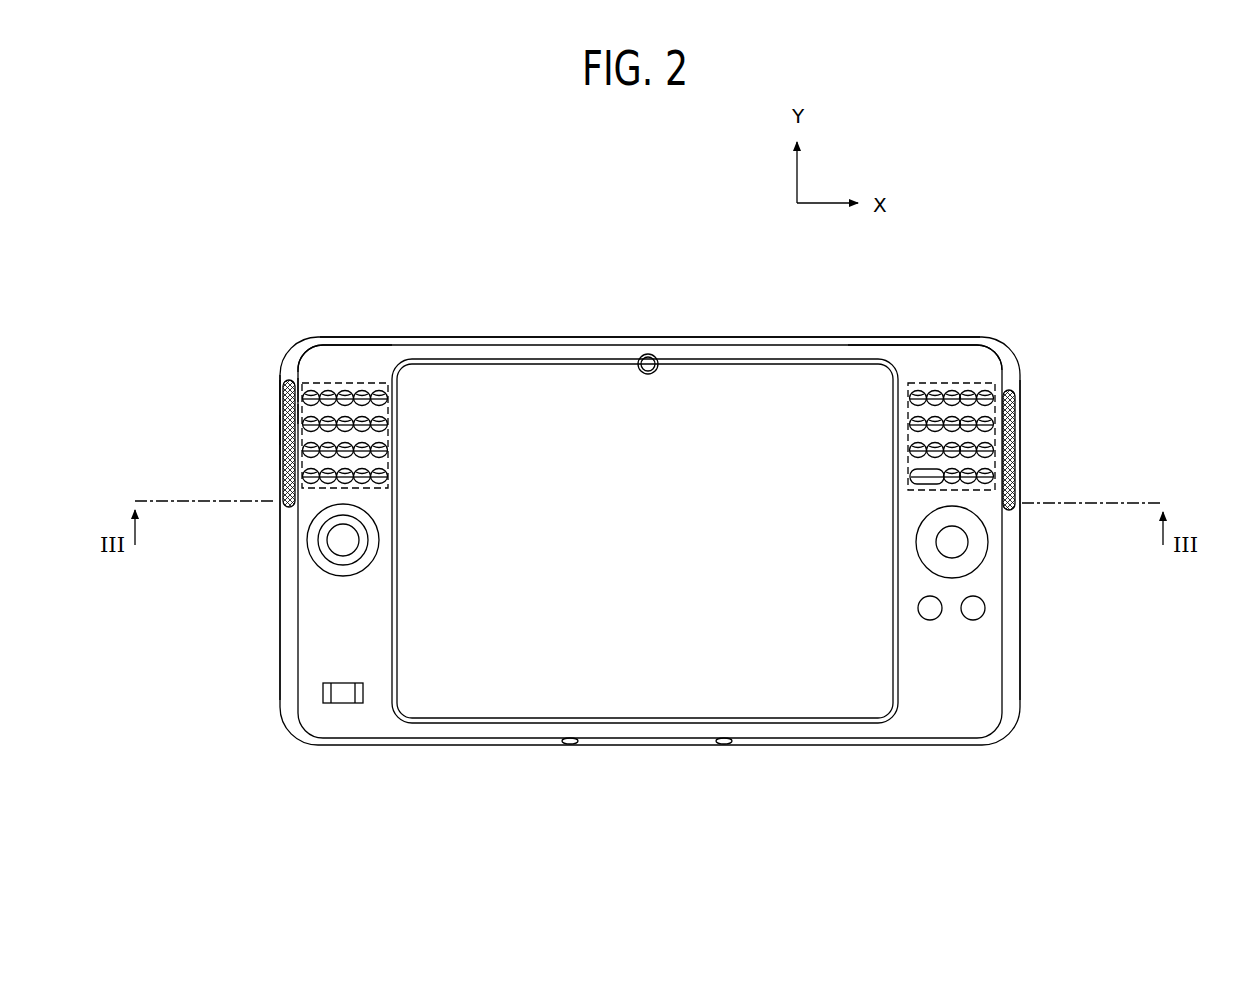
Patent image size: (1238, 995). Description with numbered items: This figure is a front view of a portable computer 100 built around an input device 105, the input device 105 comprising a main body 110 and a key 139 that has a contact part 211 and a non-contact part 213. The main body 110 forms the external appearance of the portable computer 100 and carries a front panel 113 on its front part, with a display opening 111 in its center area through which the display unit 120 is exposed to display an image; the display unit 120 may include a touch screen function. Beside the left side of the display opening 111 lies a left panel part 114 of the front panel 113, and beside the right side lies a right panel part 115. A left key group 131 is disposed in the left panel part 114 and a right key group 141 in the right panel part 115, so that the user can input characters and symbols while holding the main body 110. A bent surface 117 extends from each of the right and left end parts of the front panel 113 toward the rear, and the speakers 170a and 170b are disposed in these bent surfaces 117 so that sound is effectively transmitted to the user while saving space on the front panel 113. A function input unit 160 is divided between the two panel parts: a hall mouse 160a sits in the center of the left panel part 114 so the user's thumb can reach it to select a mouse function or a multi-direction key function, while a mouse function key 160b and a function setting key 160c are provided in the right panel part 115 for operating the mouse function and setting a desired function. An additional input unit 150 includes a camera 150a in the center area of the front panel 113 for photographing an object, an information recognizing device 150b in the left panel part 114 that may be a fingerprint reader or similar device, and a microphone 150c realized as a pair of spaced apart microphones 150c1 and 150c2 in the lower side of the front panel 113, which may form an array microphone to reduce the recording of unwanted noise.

The portable computer 100 is at (416, 172).
The main body 110 is at (278, 344).
The input device 105 is at (186, 323).
The key 139 is at (303, 398).
The non-contact part 213 is at (282, 412).
The contact part 211 is at (279, 426).
The speaker 170a is at (283, 480).
The speaker 170b is at (1014, 440).
The bent surface 117 is at (290, 610).
The front panel 113 is at (920, 266).
The left panel part 114 is at (377, 372).
The right panel part 115 is at (913, 372).
The left key group 131 is at (340, 383).
The right key group 141 is at (960, 383).
The display unit 120 is at (822, 693).
The display opening 111 is at (727, 722).
The function input unit 160 is at (1108, 542).
The hall mouse 160a is at (380, 547).
The mouse function key 160b is at (939, 600).
The function setting key 160c is at (988, 544).
The additional input unit 150 is at (643, 832).
The camera 150a is at (650, 374).
The information recognizing device 150b is at (345, 700).
The microphone 150c is at (693, 798).
The microphone 150c1 is at (573, 744).
The microphone 150c2 is at (722, 744).